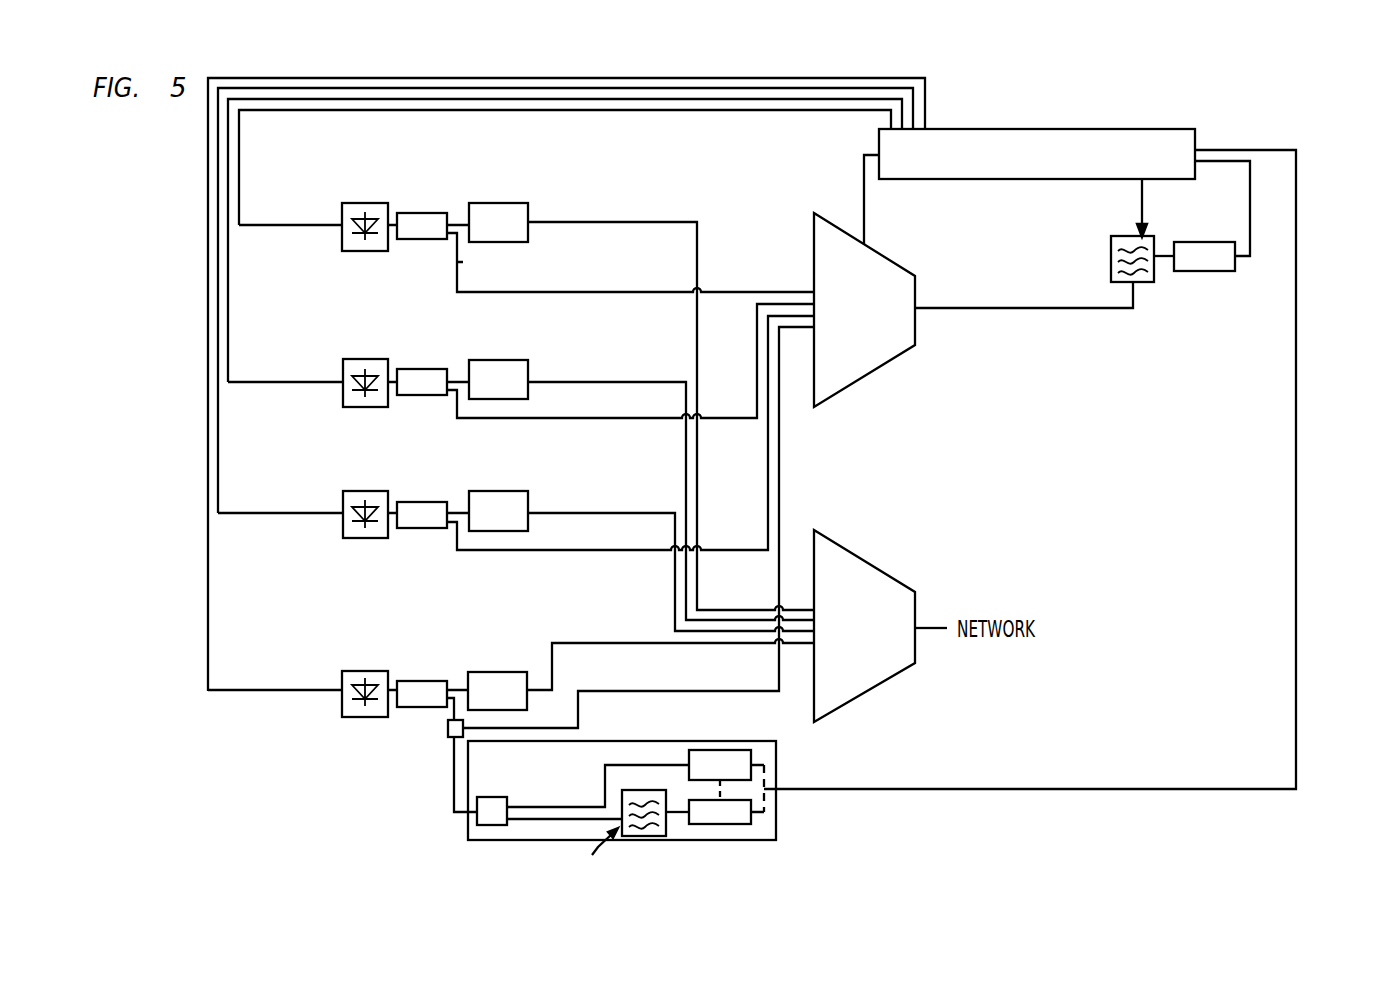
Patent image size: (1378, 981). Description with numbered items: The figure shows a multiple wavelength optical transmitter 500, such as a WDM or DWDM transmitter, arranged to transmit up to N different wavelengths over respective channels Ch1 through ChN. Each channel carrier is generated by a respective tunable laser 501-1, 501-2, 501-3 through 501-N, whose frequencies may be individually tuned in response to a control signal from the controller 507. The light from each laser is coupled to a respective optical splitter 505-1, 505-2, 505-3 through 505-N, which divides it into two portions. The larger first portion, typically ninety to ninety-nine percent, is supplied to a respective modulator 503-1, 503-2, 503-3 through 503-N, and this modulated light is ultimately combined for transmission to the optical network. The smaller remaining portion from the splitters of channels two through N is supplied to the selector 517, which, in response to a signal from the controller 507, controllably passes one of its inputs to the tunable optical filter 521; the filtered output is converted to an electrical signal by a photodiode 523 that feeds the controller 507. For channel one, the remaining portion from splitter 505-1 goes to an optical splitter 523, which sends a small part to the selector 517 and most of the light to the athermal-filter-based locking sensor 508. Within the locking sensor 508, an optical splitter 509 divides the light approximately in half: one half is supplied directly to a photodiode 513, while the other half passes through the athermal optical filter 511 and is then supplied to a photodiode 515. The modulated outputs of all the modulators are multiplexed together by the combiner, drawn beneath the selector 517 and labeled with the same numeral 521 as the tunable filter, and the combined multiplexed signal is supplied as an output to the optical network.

The multiple wavelength optical transmitter 500 is at (1339, 134).
The tunable laser 501-N is at (342, 251).
The tunable laser 501-3 is at (342, 407).
The tunable laser 501-2 is at (342, 538).
The tunable laser 501-1 is at (342, 672).
The modulator 503-N is at (500, 203).
The modulator 503-3 is at (500, 360).
The modulator 503-2 is at (500, 491).
The modulator 503-1 is at (468, 672).
The optical splitter 505-N is at (417, 213).
The optical splitter 505-3 is at (417, 369).
The optical splitter 505-2 is at (417, 502).
The optical splitter 505-1 is at (412, 707).
The controller 507 is at (1153, 129).
The athermal-filter-based locking sensor 508 is at (776, 833).
The optical splitter 509 is at (490, 797).
The athermal optical filter 511 is at (643, 838).
The photodiode 513 is at (723, 750).
The photodiode 515 is at (722, 825).
The selector 517 is at (878, 369).
The tunable optical filter 521 is at (876, 566).
The optical splitter 523 is at (1236, 271).